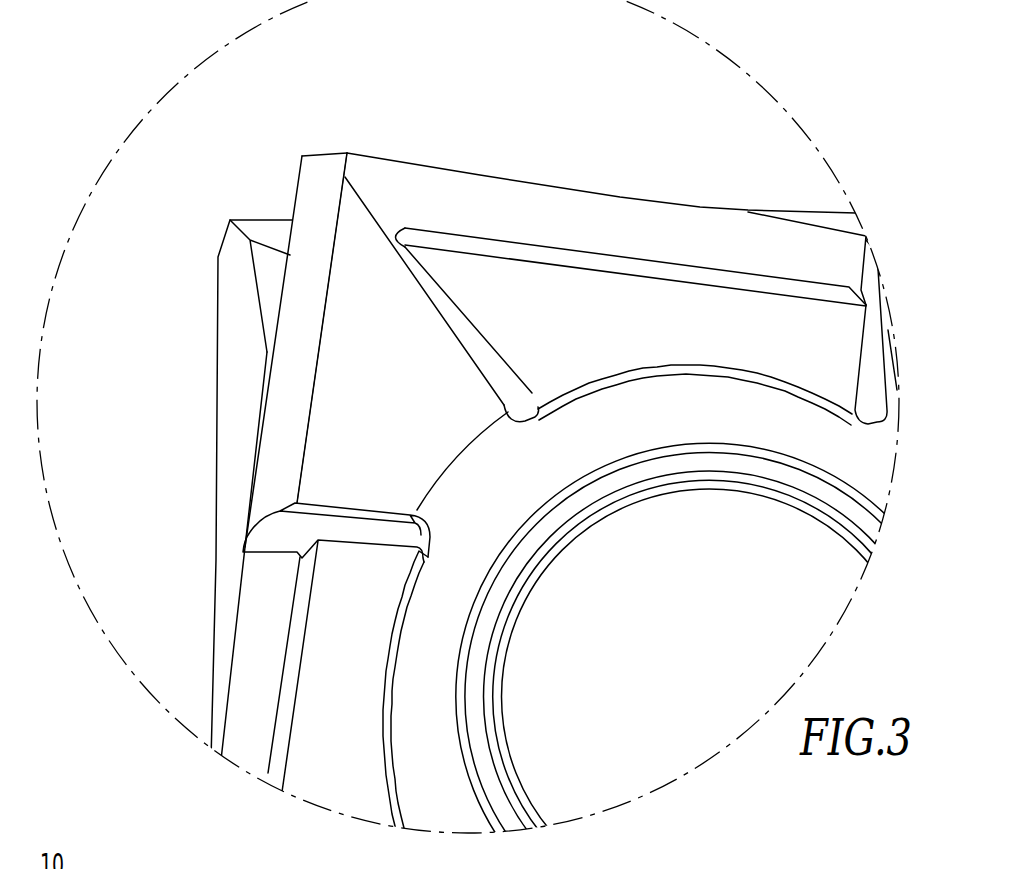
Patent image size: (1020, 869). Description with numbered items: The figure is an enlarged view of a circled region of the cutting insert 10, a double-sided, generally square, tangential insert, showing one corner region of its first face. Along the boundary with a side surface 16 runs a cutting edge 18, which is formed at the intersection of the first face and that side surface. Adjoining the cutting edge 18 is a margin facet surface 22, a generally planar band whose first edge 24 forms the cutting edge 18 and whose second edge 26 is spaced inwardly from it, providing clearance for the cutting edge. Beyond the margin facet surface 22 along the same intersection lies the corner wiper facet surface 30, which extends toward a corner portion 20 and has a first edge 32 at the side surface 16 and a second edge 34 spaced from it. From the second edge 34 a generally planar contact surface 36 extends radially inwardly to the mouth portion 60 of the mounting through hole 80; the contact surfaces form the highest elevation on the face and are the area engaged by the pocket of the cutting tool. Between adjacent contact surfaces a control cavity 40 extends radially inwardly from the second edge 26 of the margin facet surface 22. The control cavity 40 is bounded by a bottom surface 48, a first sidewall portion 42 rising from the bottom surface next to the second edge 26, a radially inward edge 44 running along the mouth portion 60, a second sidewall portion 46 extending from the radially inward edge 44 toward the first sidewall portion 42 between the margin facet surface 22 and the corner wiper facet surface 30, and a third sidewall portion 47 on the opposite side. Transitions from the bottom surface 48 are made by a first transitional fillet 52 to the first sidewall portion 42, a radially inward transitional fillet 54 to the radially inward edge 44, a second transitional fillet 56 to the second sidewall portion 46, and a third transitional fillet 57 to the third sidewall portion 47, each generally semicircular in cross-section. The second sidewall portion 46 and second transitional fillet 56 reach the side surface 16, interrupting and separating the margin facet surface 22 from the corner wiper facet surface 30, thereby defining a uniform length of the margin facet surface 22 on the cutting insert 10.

The cutting insert 10 is at (272, 118).
The side surface 16 is at (267, 347).
The cutting edge 18 is at (437, 170).
The corner portion 20 is at (326, 152).
The margin facet surface 22 is at (675, 217).
The first edge 24 is at (615, 200).
The second edge 26 is at (653, 263).
The corner wiper facet surface 30 is at (309, 230).
The first edge 32 is at (290, 285).
The second edge 34 is at (331, 258).
The contact surface 36 is at (343, 364).
The control cavity 40 is at (735, 300).
The first sidewall portion 42 is at (510, 243).
The radially inward edge 44 is at (677, 365).
The second sidewall portion 46 is at (887, 330).
The third sidewall portion 47 is at (447, 310).
The bottom surface 48 is at (480, 273).
The first transitional fillet 52 is at (560, 253).
The radially inward transitional fillet 54 is at (773, 383).
The second transitional fillet 56 is at (872, 363).
The third transitional fillet 57 is at (473, 350).
The mouth portion 60 is at (500, 473).
The mounting through hole 80 is at (484, 713).